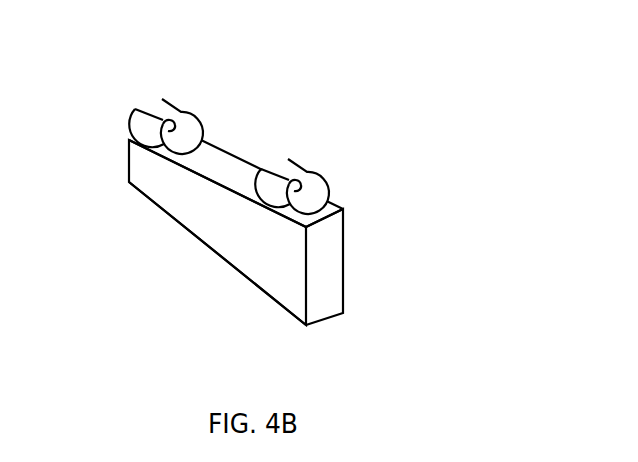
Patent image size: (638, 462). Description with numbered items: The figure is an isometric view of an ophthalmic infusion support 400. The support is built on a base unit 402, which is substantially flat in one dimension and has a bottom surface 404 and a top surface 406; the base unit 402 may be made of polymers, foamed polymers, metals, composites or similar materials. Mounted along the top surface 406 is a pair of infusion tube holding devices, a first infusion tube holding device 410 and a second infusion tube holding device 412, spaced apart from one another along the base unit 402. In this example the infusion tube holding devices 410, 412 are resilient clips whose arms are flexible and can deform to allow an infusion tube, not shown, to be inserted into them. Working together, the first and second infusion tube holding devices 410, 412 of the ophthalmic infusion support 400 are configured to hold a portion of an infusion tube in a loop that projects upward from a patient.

The ophthalmic infusion support 400 is at (270, 209).
The base unit 402 is at (205, 211).
The bottom surface 404 is at (247, 280).
The top surface 406 is at (215, 167).
The first infusion tube holding device 410 is at (178, 120).
The second infusion tube holding device 412 is at (316, 181).